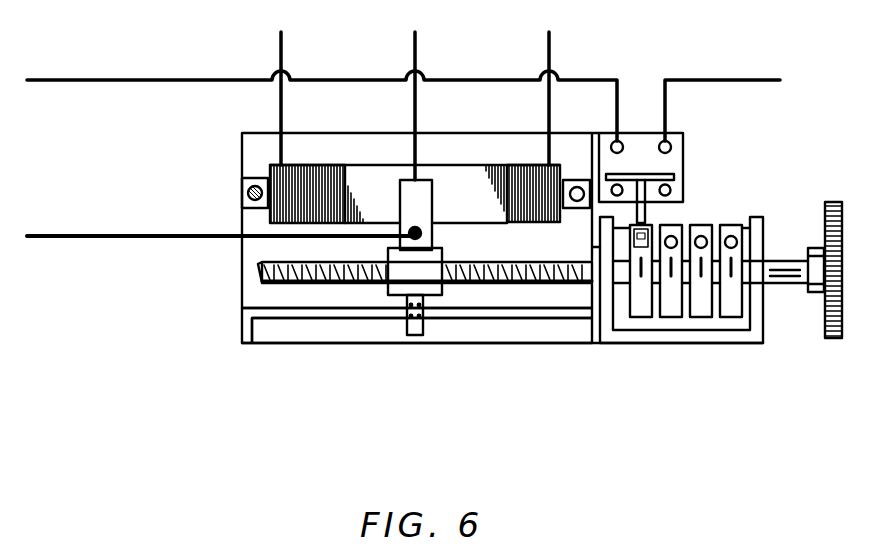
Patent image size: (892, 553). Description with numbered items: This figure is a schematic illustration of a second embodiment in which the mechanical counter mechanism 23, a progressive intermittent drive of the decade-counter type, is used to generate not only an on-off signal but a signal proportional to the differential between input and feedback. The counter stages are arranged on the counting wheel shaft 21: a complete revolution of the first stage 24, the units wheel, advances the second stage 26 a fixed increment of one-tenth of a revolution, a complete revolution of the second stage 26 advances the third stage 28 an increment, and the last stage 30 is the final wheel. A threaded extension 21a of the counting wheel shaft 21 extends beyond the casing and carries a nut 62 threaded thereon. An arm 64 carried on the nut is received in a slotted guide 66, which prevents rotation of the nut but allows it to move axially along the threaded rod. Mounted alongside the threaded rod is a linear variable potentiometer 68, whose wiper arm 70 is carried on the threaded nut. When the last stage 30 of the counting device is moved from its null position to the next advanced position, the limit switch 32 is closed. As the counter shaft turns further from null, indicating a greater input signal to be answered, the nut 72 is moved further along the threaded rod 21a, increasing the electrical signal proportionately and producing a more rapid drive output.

The nut 72 is at (65, 80).
The linear variable potentiometer 68 is at (293, 165).
The wiper arm 70 is at (420, 180).
The limit switch 32 is at (655, 176).
The counting wheel shaft 21 is at (783, 262).
The threaded extension 21a is at (262, 282).
The slotted guide 66 is at (326, 318).
The nut 62 is at (390, 296).
The arm 64 is at (427, 302).
The last stage 30 is at (637, 317).
The third stage 28 is at (668, 317).
The second stage 26 is at (700, 317).
The first stage 24 is at (730, 317).
The progressive intermittent drive 23 is at (780, 352).